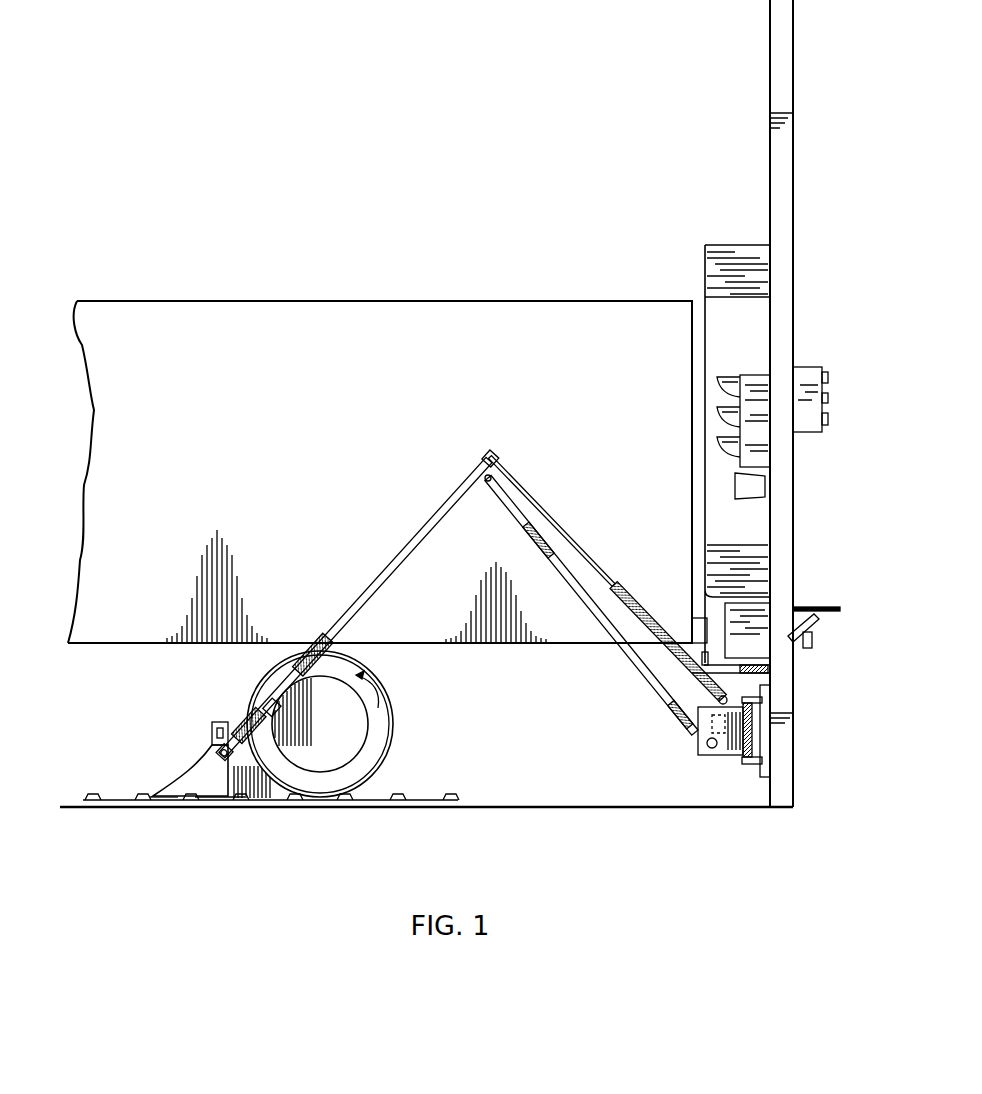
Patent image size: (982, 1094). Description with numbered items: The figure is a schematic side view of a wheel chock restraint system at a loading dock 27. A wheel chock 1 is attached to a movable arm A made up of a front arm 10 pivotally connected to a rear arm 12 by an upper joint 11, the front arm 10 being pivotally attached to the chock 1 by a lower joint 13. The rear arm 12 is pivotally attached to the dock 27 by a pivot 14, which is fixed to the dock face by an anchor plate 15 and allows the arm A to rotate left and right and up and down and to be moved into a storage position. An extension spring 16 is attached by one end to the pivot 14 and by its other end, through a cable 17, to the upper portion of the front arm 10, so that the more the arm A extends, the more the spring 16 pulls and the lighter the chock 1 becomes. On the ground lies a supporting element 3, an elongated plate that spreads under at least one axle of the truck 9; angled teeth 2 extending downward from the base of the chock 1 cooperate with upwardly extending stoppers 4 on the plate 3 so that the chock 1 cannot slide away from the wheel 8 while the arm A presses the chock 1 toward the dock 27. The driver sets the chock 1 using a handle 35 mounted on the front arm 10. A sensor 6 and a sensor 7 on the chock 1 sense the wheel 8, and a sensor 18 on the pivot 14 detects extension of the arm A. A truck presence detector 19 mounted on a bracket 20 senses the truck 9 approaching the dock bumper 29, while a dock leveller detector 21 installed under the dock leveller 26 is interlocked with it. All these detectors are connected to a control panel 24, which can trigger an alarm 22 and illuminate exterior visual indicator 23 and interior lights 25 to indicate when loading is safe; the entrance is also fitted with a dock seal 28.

The wheel chock 1 is at (182, 770).
The teeth 2 is at (172, 799).
The supporting element 3 is at (353, 808).
The stoppers 4 is at (400, 794).
The sensor 6 is at (212, 731).
The sensor 7 is at (258, 698).
The wheel 8 is at (392, 701).
The truck 9 is at (262, 301).
The front arm 10 is at (427, 522).
The upper joint 11 is at (488, 483).
The rear arm 12 is at (603, 617).
The lower joint 13 is at (218, 801).
The pivot 14 is at (714, 757).
The anchor plate 15 is at (765, 770).
The extension spring 16 is at (627, 597).
The cable 17 is at (528, 498).
The sensor 18 is at (696, 722).
The truck presence detector 19 is at (698, 657).
The bracket 20 is at (718, 688).
The dock leveller detector 21 is at (812, 650).
The alarm 22 is at (765, 485).
The visual indicator 23 is at (723, 375).
The control panel 24 is at (812, 367).
The interior lights 25 is at (828, 420).
The dock leveller 26 is at (815, 608).
The loading dock 27 is at (770, 52).
The dock seal 28 is at (733, 245).
The dock bumper 29 is at (725, 608).
The handle 35 is at (296, 645).
The movable arm A is at (465, 468).